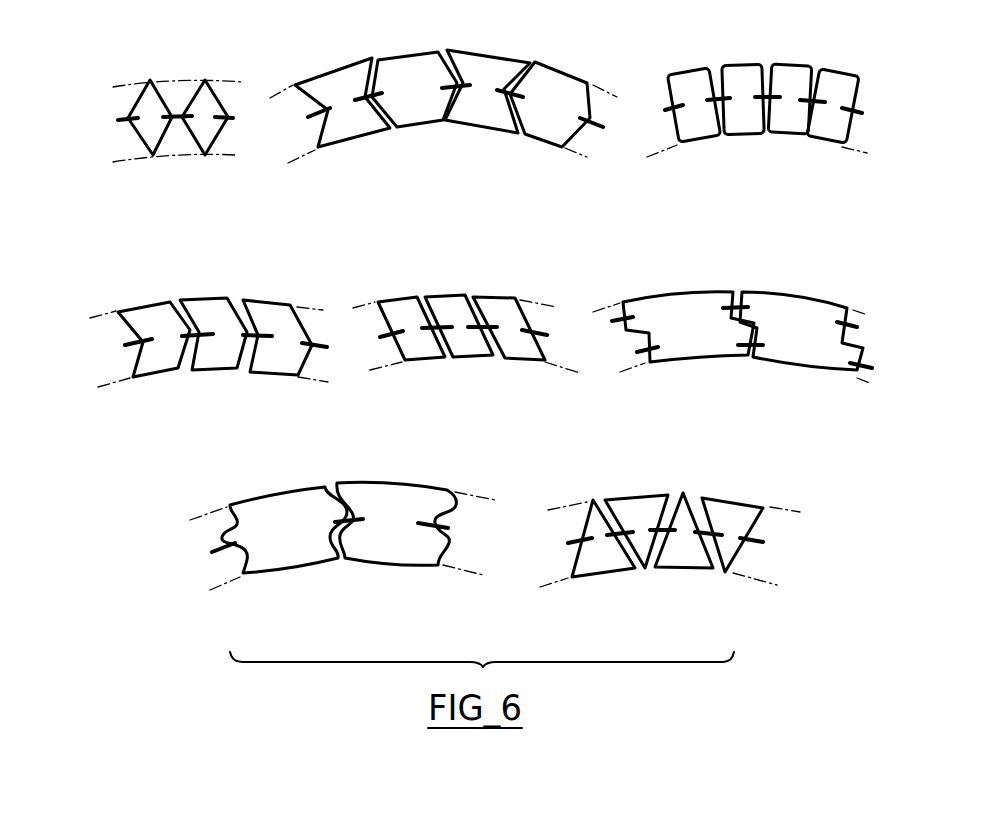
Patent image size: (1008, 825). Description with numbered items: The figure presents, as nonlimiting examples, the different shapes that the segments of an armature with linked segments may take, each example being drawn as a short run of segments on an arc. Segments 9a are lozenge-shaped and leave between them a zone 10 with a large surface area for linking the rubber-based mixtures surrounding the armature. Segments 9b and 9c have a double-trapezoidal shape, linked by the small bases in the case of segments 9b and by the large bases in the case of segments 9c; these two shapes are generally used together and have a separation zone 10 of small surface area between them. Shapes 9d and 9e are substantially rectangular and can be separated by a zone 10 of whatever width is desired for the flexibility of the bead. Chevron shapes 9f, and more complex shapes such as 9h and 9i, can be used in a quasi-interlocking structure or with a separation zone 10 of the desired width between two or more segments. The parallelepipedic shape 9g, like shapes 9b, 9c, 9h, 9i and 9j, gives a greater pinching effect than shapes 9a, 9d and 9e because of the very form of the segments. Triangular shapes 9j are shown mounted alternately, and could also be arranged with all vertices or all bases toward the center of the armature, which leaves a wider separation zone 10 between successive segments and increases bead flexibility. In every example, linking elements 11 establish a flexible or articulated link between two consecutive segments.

The lozenge-shaped segments 9a is at (153, 107).
The double-trapezoidal segments linked by the small bases 9b is at (328, 72).
The double-trapezoidal segments linked by the large bases 9c is at (412, 67).
The substantially rectangular segments 9d is at (698, 80).
The substantially rectangular segments 9e is at (750, 77).
The chevron-shaped segments 9f is at (207, 310).
The parallelepipedic segments 9g is at (488, 303).
The complex-shaped segments 9h is at (775, 308).
The complex-shaped segments 9i is at (363, 502).
The triangular segments 9j is at (728, 515).
The separation zone 10 is at (180, 137).
The linking elements 11 is at (228, 120).